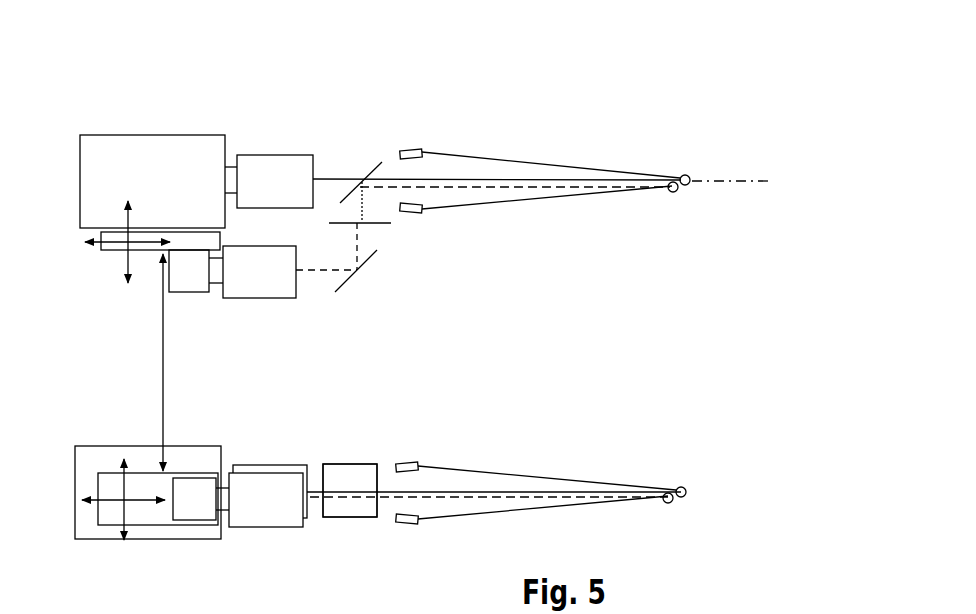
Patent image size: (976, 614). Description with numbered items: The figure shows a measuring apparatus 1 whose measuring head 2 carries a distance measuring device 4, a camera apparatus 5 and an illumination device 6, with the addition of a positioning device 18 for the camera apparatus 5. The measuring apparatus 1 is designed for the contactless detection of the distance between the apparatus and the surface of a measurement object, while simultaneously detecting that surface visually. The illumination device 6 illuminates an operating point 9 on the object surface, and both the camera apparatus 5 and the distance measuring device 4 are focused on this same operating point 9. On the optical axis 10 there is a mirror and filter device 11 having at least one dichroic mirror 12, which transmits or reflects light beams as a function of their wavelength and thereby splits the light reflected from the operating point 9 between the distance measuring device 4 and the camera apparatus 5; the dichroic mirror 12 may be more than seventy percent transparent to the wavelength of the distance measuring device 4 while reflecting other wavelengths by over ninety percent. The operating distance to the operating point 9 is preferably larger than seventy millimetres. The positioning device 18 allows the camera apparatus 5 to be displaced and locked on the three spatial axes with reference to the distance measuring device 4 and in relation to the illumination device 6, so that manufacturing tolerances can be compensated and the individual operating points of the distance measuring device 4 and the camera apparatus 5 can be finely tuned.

The measuring apparatus 1 is at (93, 115).
The measuring head 2 is at (248, 435).
The distance measuring device 4 is at (143, 148).
The camera apparatus 5 is at (257, 290).
The illumination device 6 is at (410, 147).
The operating point 9 is at (684, 192).
The optical axis 10 is at (728, 182).
The mirror and filter device 11 is at (355, 168).
The dichroic mirror 12 is at (374, 160).
The positioning device 18 is at (163, 331).